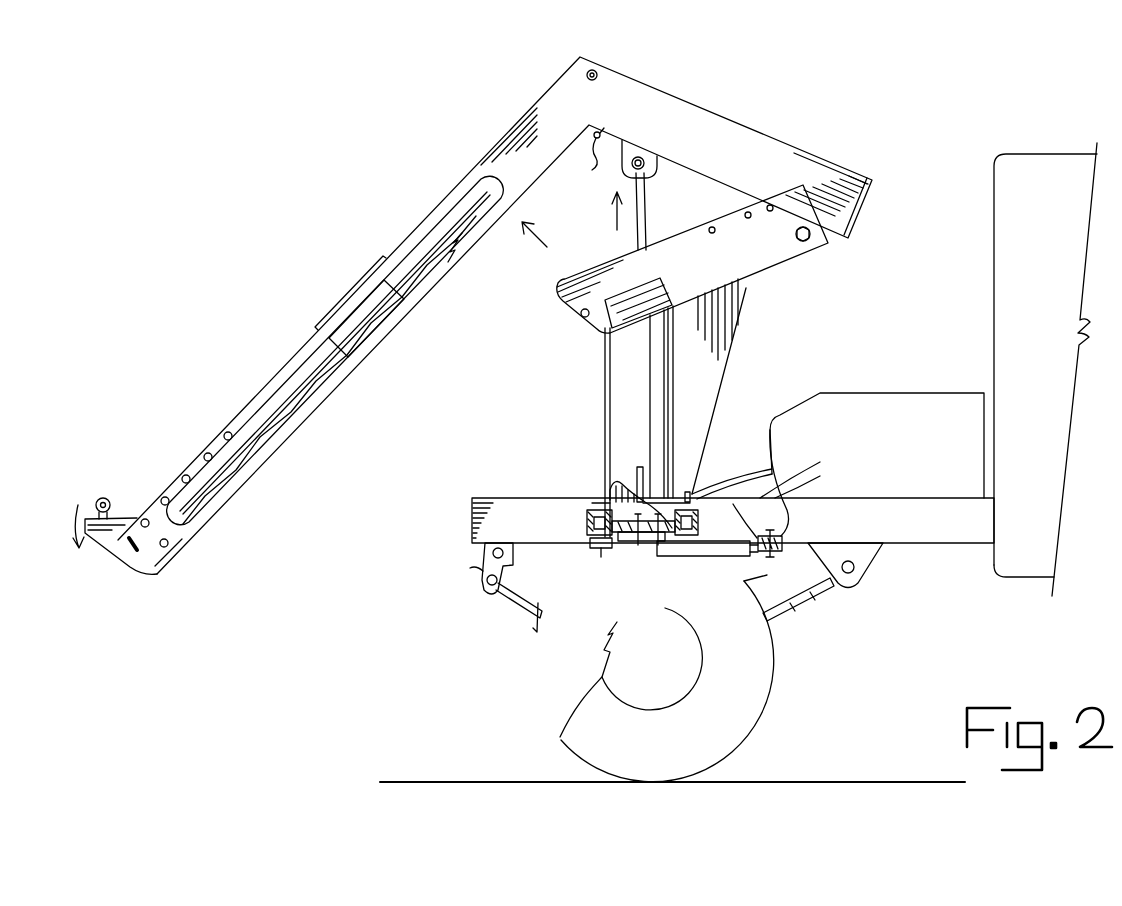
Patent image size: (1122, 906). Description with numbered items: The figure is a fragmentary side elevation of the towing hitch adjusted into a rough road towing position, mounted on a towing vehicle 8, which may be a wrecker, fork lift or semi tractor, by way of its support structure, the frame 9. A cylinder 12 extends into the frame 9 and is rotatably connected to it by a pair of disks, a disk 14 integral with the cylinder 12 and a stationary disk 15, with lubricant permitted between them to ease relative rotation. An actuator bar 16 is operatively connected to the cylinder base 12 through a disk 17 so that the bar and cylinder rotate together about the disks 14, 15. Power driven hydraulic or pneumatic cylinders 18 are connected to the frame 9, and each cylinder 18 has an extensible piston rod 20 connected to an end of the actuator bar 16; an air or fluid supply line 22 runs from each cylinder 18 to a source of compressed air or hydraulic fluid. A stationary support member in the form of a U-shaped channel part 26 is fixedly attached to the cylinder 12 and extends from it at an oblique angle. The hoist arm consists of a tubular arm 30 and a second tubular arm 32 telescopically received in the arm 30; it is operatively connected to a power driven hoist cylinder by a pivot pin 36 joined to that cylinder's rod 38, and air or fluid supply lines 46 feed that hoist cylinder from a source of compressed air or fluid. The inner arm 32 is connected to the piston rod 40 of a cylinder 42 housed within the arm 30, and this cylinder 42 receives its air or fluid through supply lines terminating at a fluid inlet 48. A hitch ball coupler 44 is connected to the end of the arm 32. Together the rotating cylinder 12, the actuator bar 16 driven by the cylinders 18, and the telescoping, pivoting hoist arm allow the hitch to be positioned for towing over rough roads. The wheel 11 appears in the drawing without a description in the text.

The towing vehicle 8 is at (1026, 283).
The frame 9 is at (703, 520).
The wheel 11 is at (600, 742).
The cylinder 12 is at (622, 358).
The disk 14 is at (608, 500).
The disk 15 is at (592, 532).
The actuator bar 16 is at (597, 553).
The disk 17 is at (642, 547).
The hydraulic or pneumatic cylinder 18 is at (697, 543).
The extensible piston rod 20 is at (632, 547).
The air or fluid supply line 22 is at (785, 502).
The U-shaped channel part 26 is at (780, 258).
The tubular arm 30 is at (442, 214).
The tubular arm 32 is at (302, 358).
The pivot pin 36 is at (642, 156).
The cylinder rod 38 is at (645, 208).
The piston rod 40 is at (270, 417).
The cylinder 42 is at (397, 280).
The hitch ball coupler 44 is at (115, 518).
The air or fluid supply line 46 is at (737, 470).
The fluid inlet 48 is at (597, 140).